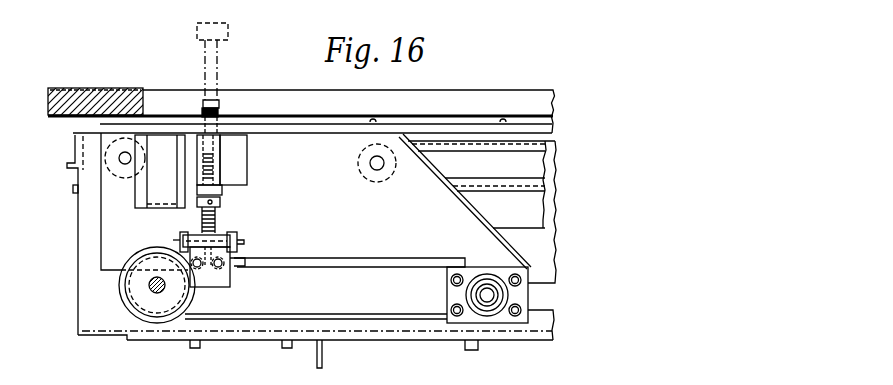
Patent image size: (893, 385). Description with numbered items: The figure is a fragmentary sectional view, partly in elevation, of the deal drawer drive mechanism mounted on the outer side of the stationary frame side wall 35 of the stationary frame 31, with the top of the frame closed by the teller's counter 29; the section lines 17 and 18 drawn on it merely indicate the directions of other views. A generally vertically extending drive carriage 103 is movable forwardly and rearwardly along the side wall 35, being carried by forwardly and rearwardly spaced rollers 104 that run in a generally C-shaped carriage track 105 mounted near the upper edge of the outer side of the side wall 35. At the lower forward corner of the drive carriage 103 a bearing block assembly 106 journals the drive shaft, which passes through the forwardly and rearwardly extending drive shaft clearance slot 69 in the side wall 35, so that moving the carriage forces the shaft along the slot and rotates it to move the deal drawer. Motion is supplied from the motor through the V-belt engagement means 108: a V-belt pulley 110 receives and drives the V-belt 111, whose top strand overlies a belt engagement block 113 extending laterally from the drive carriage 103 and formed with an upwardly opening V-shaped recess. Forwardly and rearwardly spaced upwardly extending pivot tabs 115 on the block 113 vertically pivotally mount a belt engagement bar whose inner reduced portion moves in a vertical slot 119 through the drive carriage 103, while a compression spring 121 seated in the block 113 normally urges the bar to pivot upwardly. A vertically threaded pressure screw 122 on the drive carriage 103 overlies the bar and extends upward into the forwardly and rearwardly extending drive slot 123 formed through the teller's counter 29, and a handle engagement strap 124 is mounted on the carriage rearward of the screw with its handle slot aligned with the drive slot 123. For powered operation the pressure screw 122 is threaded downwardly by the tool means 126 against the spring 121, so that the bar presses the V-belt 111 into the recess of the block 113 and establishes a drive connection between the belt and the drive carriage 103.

The section line 17 is at (100, 132).
The section line 18 is at (201, 8).
The teller's counter 29 is at (97, 88).
The stationary frame 31 is at (370, 341).
The stationary frame side wall 35 is at (97, 303).
The drive shaft clearance slot 69 is at (533, 310).
The drive carriage 103 is at (108, 222).
The rollers 104 is at (107, 167).
The carriage track 105 is at (535, 160).
The bearing block assembly 106 is at (487, 300).
The V-belt engagement means 108 is at (268, 236).
The V-belt pulley 110 is at (135, 283).
The V-belt 111 is at (308, 260).
The belt engagement block 113 is at (208, 280).
The pivot tabs 115 is at (185, 235).
The slot 119 is at (222, 188).
The compression spring 121 is at (245, 265).
The pressure screw 122 is at (219, 212).
The drive slot 123 is at (432, 97).
The handle engagement strap 124 is at (165, 147).
The tool means 126 is at (230, 32).